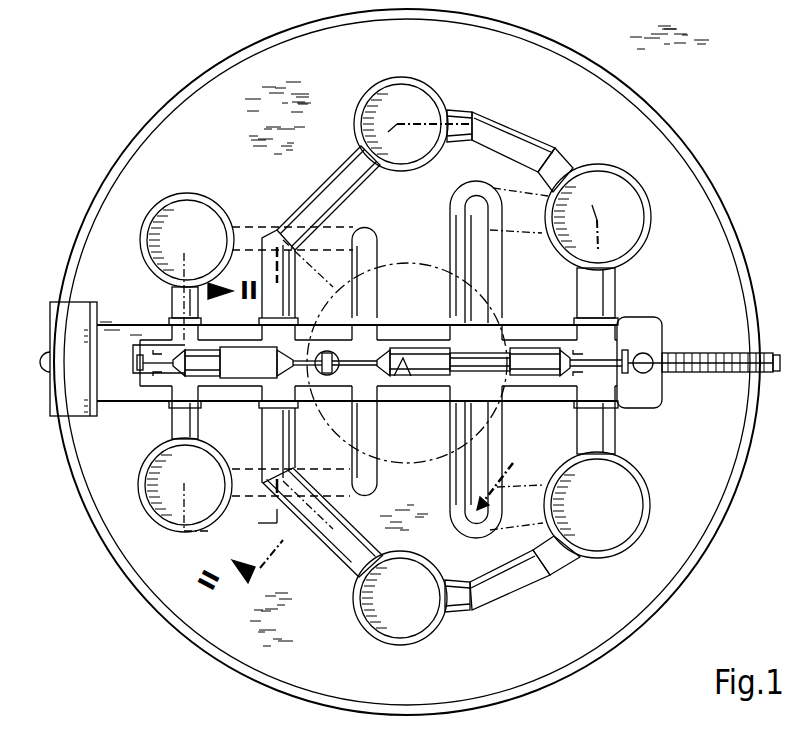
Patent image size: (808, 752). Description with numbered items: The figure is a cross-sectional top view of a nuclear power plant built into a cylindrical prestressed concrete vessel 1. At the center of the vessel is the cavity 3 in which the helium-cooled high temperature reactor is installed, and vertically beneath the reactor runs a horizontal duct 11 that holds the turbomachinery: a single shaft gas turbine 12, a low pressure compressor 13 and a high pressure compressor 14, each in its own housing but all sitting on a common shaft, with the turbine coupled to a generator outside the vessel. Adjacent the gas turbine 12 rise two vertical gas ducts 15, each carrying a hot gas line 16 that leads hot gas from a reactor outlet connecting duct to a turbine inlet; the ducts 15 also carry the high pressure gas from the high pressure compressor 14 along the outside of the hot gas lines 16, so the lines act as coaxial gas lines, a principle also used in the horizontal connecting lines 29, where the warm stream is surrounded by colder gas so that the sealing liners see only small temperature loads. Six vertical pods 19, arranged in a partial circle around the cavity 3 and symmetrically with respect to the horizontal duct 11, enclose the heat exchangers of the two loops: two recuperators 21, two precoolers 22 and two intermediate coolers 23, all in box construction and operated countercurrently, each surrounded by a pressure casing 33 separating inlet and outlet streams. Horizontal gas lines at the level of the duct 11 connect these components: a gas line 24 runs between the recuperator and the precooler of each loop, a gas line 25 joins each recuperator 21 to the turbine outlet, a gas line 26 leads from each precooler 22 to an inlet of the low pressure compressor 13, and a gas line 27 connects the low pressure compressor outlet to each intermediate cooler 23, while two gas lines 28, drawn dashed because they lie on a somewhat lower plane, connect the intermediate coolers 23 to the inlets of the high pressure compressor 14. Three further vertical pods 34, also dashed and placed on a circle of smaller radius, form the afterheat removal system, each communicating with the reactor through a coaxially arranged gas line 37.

The prestressed concrete vessel 1 is at (712, 408).
The cavity 3 is at (401, 302).
The horizontal duct 11 is at (650, 345).
The single shaft gas turbine 12 is at (541, 366).
The low pressure compressor 13 is at (241, 384).
The high pressure compressor 14 is at (404, 392).
The vertical gas ducts 15 is at (464, 198).
The hot gas line 16 is at (472, 210).
The vertical pods 19 is at (401, 77).
The recuperators 21 is at (634, 222).
The precoolers 22 is at (451, 116).
The intermediate coolers 23 is at (169, 258).
The gas line 24 is at (501, 138).
The gas line 25 is at (606, 302).
The gas line 26 is at (353, 161).
The gas line 27 is at (177, 304).
The gas lines 28 is at (249, 233).
The horizontal connecting lines 29 is at (519, 222).
The pressure casing 33 is at (415, 100).
The vertical pods 34 is at (289, 206).
The gas line 37 is at (329, 266).